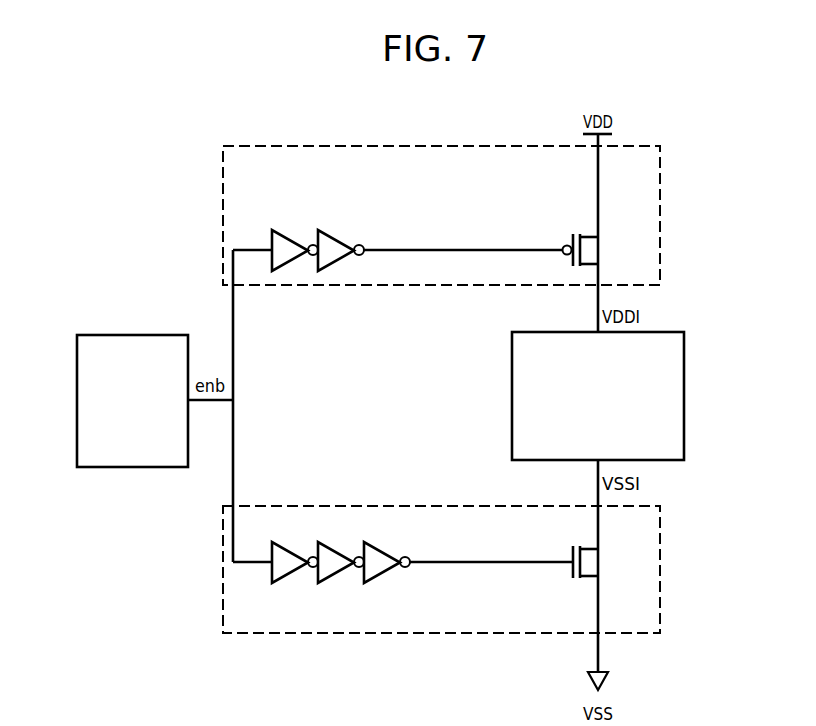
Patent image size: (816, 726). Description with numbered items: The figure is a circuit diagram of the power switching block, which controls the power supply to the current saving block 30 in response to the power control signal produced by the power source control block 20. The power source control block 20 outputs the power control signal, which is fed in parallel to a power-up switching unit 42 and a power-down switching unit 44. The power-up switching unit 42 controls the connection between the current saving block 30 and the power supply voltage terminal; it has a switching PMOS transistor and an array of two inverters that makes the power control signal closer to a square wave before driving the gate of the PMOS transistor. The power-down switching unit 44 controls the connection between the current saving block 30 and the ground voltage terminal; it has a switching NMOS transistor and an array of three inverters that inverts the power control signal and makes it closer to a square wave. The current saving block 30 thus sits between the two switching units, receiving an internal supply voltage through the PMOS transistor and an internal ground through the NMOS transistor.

The power source control block 20 is at (157, 335).
The current saving block 30 is at (652, 332).
The power-up (PU) switching unit 42 is at (632, 147).
The power-down (PD) switching unit 44 is at (632, 505).